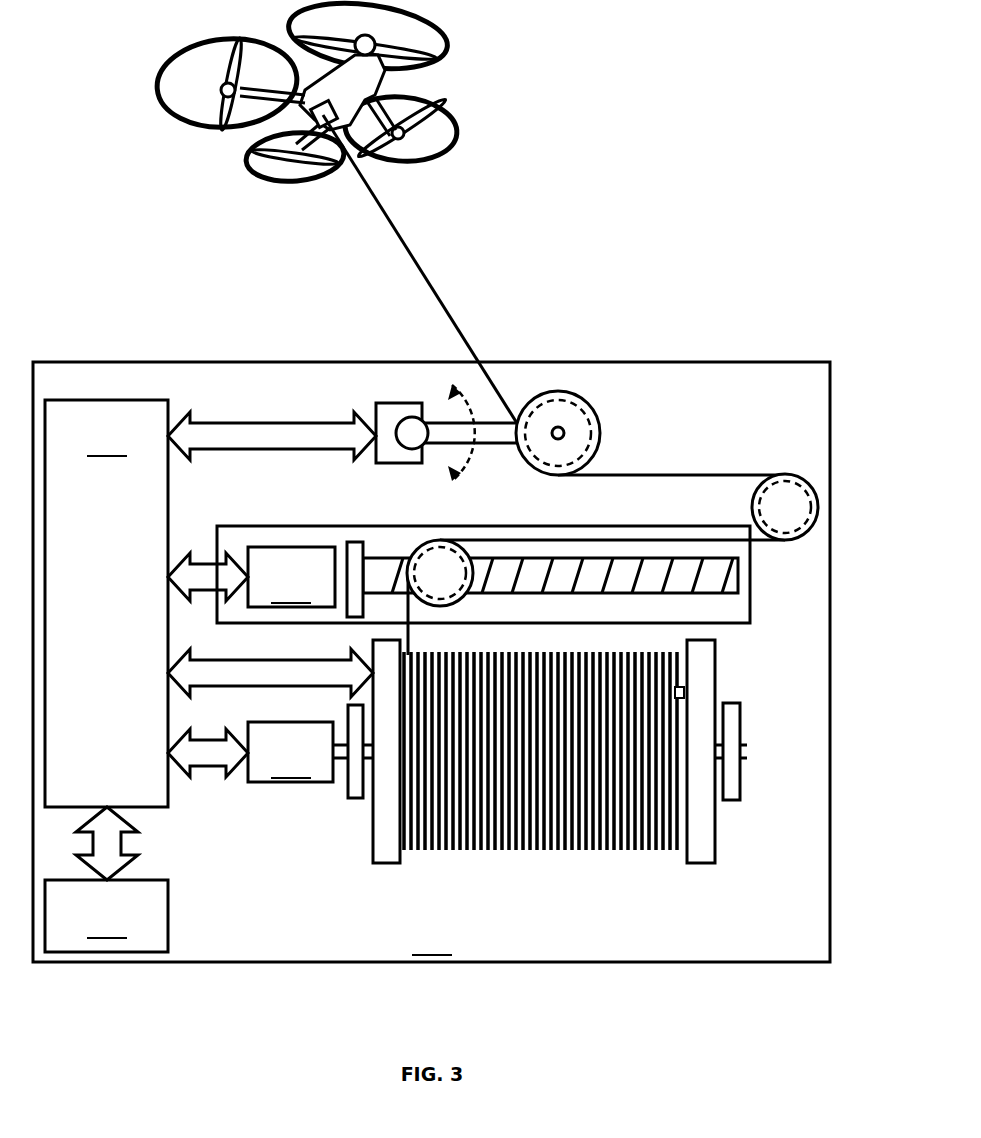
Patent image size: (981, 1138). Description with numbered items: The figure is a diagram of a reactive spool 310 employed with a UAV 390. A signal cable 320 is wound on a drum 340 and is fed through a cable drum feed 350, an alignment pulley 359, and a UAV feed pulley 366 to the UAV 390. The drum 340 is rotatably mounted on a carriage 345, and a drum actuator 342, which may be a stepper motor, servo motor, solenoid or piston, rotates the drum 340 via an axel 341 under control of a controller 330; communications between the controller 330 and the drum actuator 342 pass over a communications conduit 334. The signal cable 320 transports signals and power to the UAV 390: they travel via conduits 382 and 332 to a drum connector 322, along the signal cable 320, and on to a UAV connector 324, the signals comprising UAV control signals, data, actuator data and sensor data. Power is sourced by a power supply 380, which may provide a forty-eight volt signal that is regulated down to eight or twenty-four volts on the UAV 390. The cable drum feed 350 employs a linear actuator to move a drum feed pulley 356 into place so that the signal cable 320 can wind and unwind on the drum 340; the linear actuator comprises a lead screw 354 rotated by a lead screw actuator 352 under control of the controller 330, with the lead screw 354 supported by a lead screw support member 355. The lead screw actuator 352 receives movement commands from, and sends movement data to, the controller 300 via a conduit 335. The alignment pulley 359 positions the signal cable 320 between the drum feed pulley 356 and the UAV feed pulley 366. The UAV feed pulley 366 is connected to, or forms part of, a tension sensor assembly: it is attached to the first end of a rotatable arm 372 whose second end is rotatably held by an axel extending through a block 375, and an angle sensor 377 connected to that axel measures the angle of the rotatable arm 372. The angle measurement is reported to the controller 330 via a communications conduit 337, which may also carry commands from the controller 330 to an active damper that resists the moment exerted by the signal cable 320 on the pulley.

The controller 300 is at (112, 42).
The reactive spool 310 is at (431, 662).
The signal cable 320 is at (442, 300).
The drum connector 322 is at (680, 693).
The UAV connector 324 is at (253, 97).
The controller 330 is at (106, 603).
The conduit 332 is at (249, 684).
The communications conduit 334 is at (189, 764).
The conduit 335 is at (189, 588).
The communications conduit 337 is at (249, 447).
The drum 340 is at (700, 847).
The axel 341 is at (743, 753).
The drum actuator 342 is at (310, 752).
The carriage 345 is at (355, 750).
The cable drum feed 350 is at (270, 527).
The lead screw actuator 352 is at (291, 577).
The lead screw 354 is at (593, 567).
The lead screw support member 355 is at (358, 542).
The drum feed pulley 356 is at (421, 583).
The alignment pulley 359 is at (766, 517).
The UAV feed pulley 366 is at (585, 395).
The rotatable arm 372 is at (453, 423).
The block 375 is at (380, 418).
The angle sensor 377 is at (402, 418).
The power supply 380 is at (106, 916).
The conduit 382 is at (116, 824).
The UAV 390 is at (347, 100).